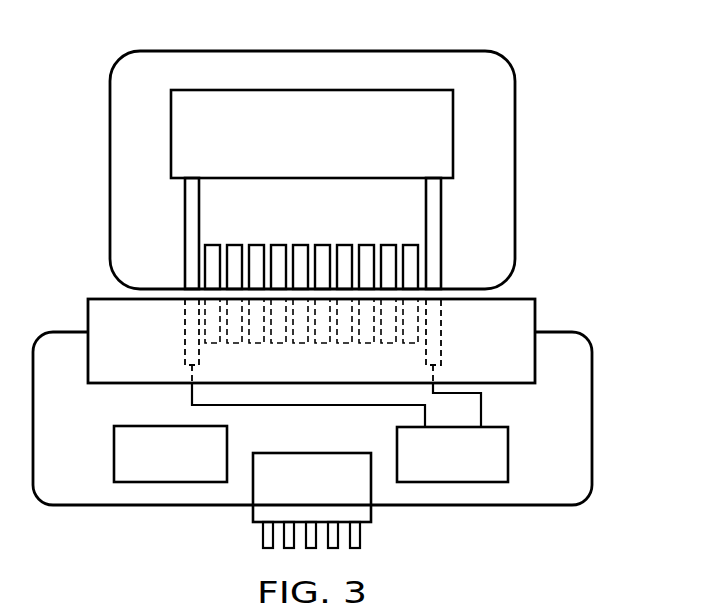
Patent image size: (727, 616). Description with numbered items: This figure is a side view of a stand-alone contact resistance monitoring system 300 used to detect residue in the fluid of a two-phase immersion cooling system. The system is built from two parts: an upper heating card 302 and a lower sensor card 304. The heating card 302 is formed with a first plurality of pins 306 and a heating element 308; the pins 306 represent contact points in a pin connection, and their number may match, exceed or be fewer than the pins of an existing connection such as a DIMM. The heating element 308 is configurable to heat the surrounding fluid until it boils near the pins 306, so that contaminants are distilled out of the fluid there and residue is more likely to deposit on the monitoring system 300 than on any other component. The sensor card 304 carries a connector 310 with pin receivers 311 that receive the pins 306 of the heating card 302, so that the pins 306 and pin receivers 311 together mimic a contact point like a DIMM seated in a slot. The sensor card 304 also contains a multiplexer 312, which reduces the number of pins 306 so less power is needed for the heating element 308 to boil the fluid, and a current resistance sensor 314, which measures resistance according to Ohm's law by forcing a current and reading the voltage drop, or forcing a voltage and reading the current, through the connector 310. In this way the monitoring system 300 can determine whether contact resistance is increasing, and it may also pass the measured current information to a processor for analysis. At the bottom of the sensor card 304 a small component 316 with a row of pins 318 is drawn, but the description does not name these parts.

The stand-alone contact resistance monitoring system 300 is at (553, 54).
The heating card 302 is at (110, 172).
The sensor card 304 is at (592, 428).
The pins 306 is at (367, 245).
The heating element 308 is at (312, 179).
The connector 310 is at (536, 313).
The pin receivers 311 is at (185, 341).
The multiplexer (MUX) 312 is at (114, 456).
The current resistance sensor 314 is at (508, 455).
The connector 316 is at (371, 516).
The connector pins 318 is at (263, 532).